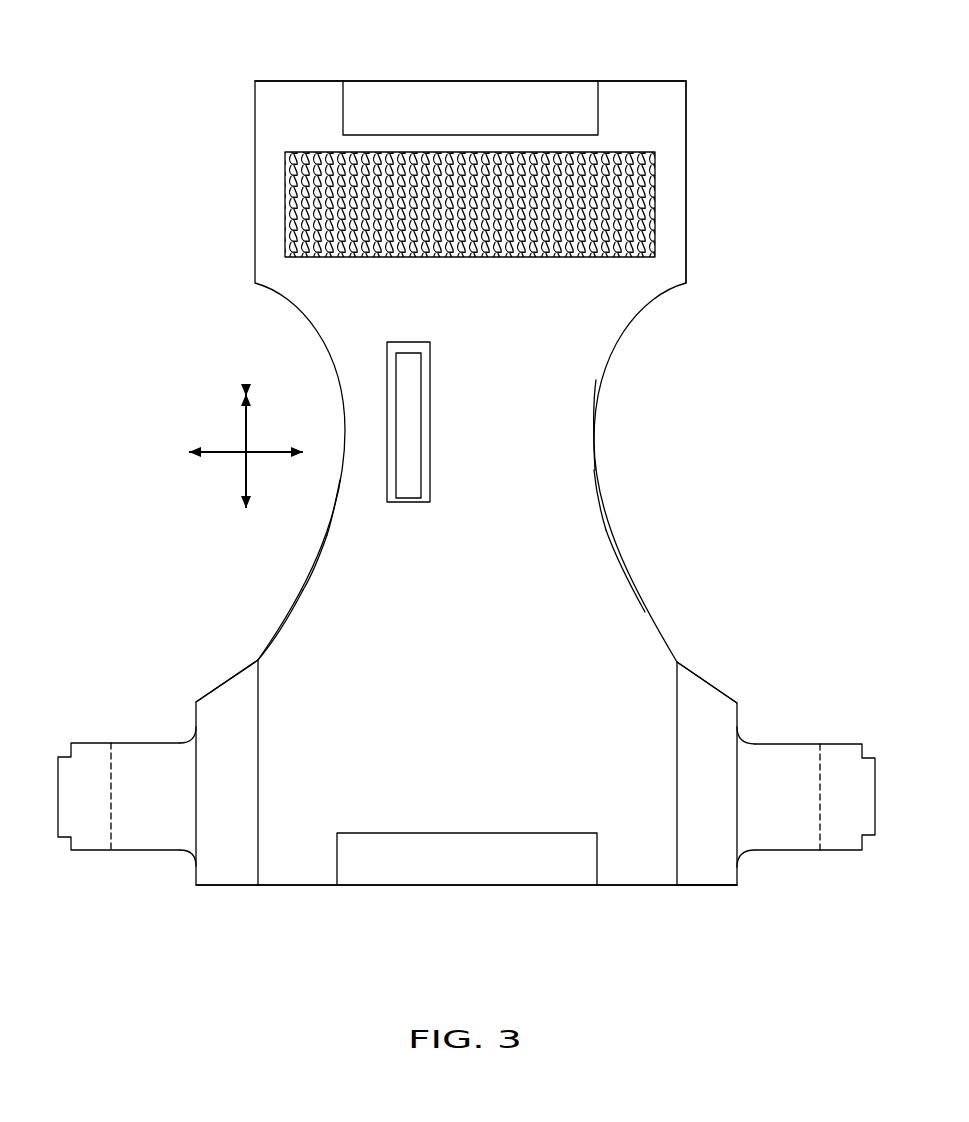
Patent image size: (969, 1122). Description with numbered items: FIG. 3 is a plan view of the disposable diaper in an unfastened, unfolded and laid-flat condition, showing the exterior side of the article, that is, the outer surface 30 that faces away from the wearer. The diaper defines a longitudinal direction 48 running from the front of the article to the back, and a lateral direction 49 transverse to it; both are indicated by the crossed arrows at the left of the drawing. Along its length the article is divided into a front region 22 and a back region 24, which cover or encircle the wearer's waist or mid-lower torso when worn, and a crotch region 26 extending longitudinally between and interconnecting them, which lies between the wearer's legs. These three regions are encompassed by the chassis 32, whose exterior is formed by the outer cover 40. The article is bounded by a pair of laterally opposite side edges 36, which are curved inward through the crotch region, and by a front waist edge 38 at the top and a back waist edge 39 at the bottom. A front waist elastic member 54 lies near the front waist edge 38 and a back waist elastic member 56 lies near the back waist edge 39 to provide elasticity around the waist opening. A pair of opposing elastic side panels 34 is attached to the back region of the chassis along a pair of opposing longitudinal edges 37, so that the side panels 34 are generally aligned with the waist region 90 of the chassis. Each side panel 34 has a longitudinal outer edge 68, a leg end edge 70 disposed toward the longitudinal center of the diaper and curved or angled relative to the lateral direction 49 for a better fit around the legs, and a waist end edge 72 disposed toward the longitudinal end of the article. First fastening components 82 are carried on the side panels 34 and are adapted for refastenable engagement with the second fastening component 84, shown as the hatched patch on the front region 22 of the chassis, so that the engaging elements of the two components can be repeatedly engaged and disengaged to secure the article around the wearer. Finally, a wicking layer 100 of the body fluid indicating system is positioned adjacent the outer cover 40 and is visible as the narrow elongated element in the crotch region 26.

The front region 22 is at (562, 313).
The back region 24 is at (620, 597).
The crotch region 26 is at (573, 423).
The outer surface 30 is at (496, 421).
The chassis 32 is at (367, 573).
The elastic side panels 34 is at (661, 98).
The side edges 36 is at (597, 480).
The longitudinal edges 37 is at (258, 797).
The front waist edge 38 is at (315, 81).
The back waist edge 39 is at (332, 893).
The outer cover 40 is at (327, 657).
The longitudinal direction 48 is at (247, 423).
The lateral direction 49 is at (267, 453).
The front waist elastic member 54 is at (563, 128).
The back waist elastic member 56 is at (425, 832).
The longitudinal outer edge 68 is at (198, 757).
The leg end edge 70 is at (703, 697).
The waist end edges 72 is at (688, 887).
The first fastening components 82 is at (97, 833).
The second fastening component 84 is at (435, 253).
The waist region 90 is at (440, 751).
The wicking layer 100 is at (407, 377).